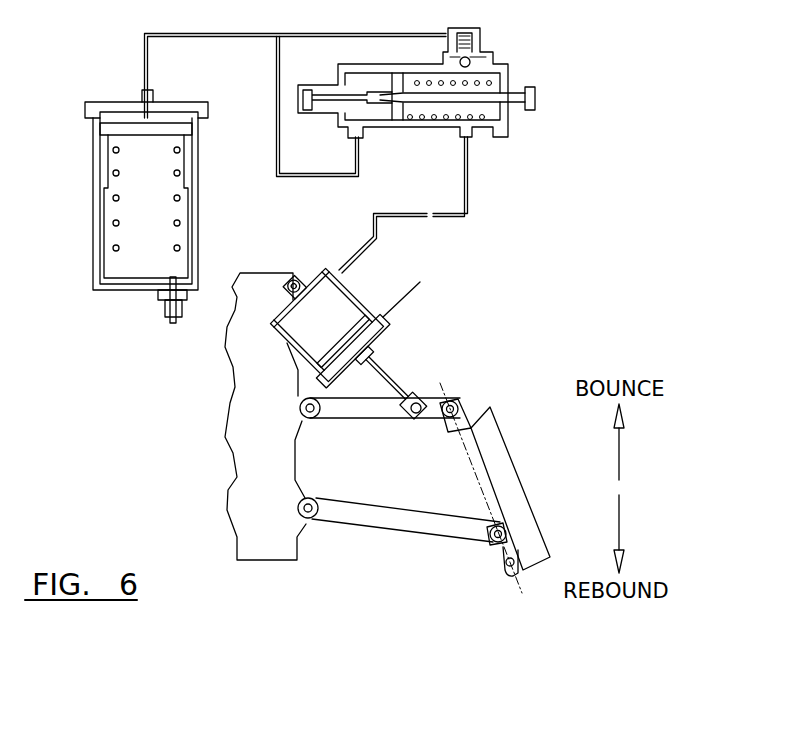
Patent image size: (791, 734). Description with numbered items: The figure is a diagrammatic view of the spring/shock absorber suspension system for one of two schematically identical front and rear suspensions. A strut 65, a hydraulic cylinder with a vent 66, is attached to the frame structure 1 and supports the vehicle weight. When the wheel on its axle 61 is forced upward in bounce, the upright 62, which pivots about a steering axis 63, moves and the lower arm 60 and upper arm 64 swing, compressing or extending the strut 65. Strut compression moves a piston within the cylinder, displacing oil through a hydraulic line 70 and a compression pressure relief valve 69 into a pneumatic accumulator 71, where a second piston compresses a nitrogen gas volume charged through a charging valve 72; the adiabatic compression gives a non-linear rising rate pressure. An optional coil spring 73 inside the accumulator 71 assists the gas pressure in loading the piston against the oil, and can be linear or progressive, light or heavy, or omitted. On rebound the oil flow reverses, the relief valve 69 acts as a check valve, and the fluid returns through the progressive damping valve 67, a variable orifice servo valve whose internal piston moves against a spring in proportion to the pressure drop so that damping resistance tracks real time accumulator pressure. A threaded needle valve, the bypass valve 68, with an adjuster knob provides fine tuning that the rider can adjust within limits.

The frame structure 1 is at (236, 541).
The lower arm 60 is at (397, 531).
The axle 61 is at (503, 571).
The upright 62 is at (505, 430).
The steering axis 63 is at (445, 389).
The upper arm 64 is at (421, 400).
The strut 65 is at (357, 298).
The vent 66 is at (406, 301).
The progressive damping valve 67 is at (482, 131).
The bypass valve 68 is at (534, 86).
The compression pressure relief valve 69 is at (470, 29).
The hydraulic line 70 is at (217, 34).
The pneumatic accumulator 71 is at (198, 146).
The charging valve 72 is at (163, 313).
The spring 73 is at (180, 223).